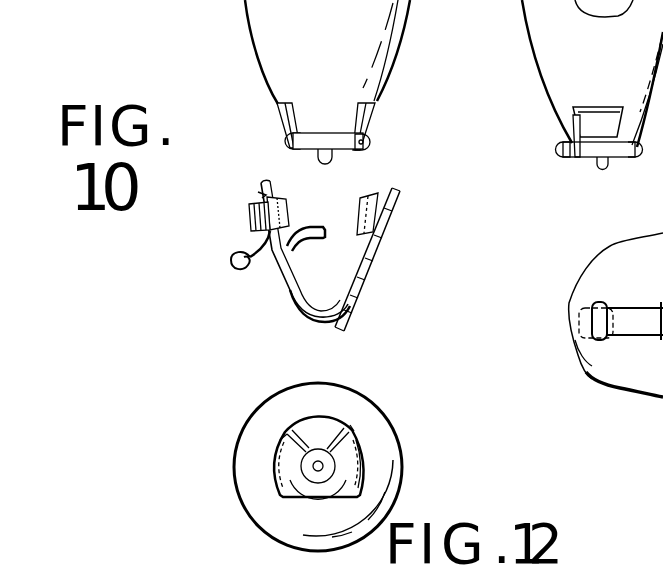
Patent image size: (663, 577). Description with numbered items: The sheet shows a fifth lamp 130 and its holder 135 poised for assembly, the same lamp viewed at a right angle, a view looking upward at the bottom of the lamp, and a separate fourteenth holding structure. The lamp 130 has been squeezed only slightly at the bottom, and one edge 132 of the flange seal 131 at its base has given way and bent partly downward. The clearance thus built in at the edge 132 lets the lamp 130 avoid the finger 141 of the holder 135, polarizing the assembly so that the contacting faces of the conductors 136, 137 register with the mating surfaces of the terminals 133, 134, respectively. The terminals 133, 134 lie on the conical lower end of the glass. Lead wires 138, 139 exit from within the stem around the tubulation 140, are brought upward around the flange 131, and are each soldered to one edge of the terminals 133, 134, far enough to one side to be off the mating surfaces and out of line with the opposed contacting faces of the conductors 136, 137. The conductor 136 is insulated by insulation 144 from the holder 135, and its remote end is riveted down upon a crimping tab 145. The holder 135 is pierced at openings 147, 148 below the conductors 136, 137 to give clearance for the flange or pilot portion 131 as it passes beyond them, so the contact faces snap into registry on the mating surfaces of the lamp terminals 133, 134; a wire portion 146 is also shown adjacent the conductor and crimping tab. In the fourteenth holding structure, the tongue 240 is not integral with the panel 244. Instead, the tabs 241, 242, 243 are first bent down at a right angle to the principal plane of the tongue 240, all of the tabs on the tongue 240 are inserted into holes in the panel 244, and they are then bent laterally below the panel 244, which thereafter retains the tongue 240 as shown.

In FIG. 10, the lamp 130 is at (351, 20).
In FIG. 12, the lamp 130 is at (252, 445).
In FIG. 11, the lamp 130 is at (600, 43).
In FIG. 10, the flange seal 131 is at (290, 140).
In FIG. 12, the flange seal 131 is at (323, 430).
In FIG. 11, the flange seal 131 is at (563, 149).
In FIG. 12, the edge of flange seal 132 is at (282, 495).
In FIG. 11, the edge of flange seal 132 is at (630, 152).
In FIG. 10, the terminal 133 is at (283, 104).
In FIG. 12, the terminal 133 is at (283, 440).
In FIG. 10, the terminal 134 is at (370, 104).
In FIG. 12, the terminal 134 is at (362, 457).
In FIG. 10, the holder 135 is at (293, 287).
In FIG. 10, the conductor 136 is at (263, 182).
In FIG. 10, the conductor 137 is at (372, 193).
In FIG. 10, the lead wire 138 is at (300, 150).
In FIG. 12, the lead wire 138 is at (292, 432).
In FIG. 10, the lead wire 139 is at (364, 148).
In FIG. 12, the lead wire 139 is at (342, 427).
In FIG. 10, the tubulation 140 is at (318, 162).
In FIG. 12, the tubulation 140 is at (312, 463).
In FIG. 10, the finger 141 is at (312, 229).
In FIG. 10, the insulation 144 is at (260, 194).
In FIG. 10, the crimping tab 145 is at (262, 246).
In FIG. 10, the insulating block 146 is at (249, 212).
In FIG. 10, the piercing 147 is at (240, 272).
In FIG. 10, the piercing 148 is at (382, 233).
In FIG. 24, the tongue 240 is at (590, 352).
In FIG. 24, the tab 241 is at (578, 318).
In FIG. 24, the tab 242 is at (616, 306).
In FIG. 24, the tab 243 is at (624, 381).
In FIG. 24, the panel 244 is at (590, 364).